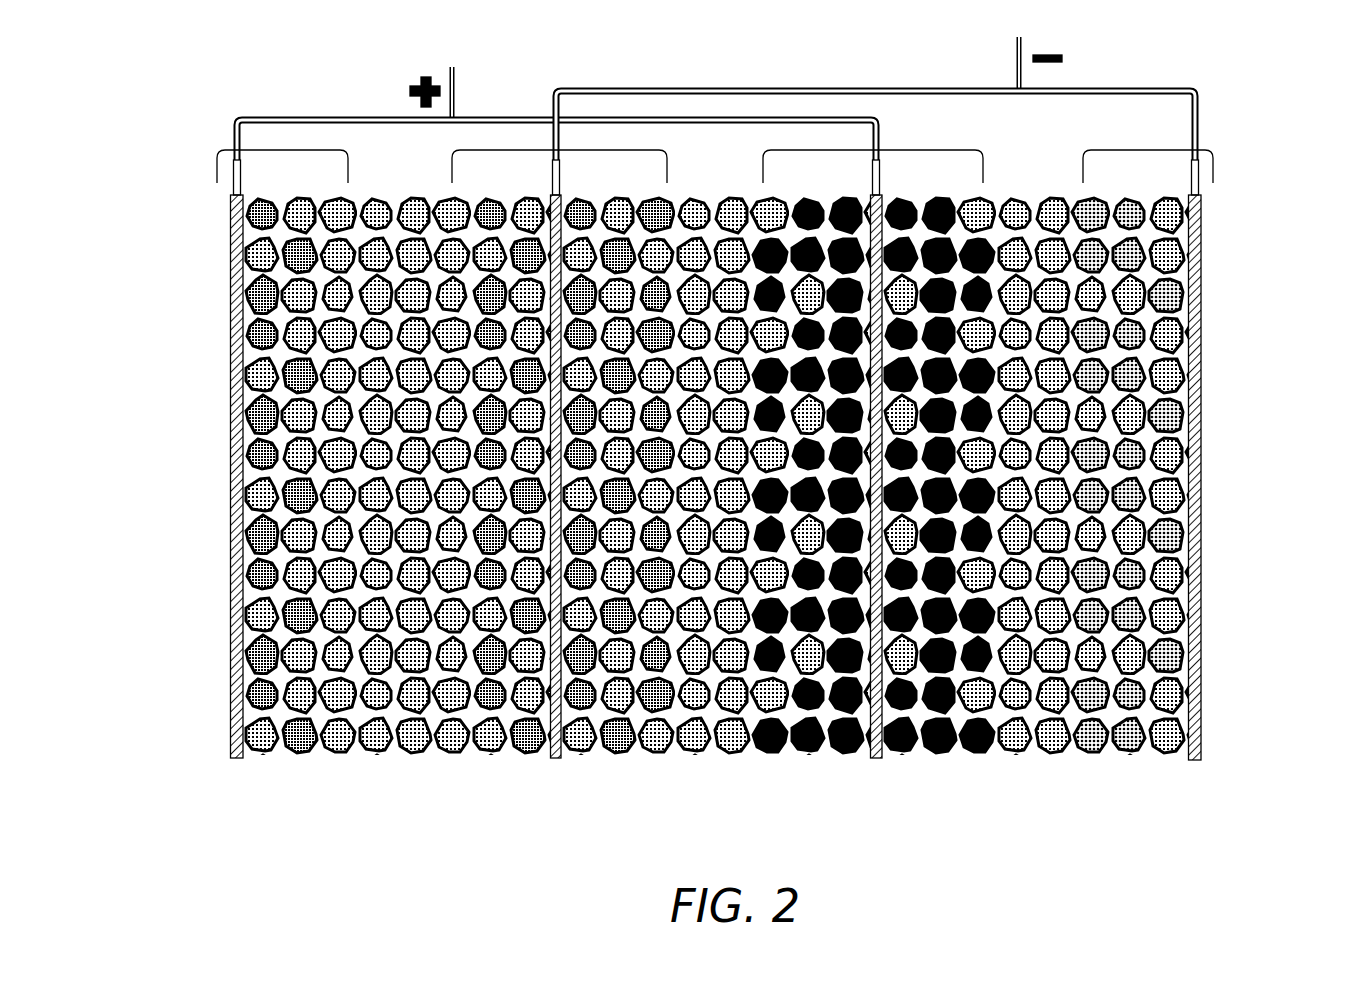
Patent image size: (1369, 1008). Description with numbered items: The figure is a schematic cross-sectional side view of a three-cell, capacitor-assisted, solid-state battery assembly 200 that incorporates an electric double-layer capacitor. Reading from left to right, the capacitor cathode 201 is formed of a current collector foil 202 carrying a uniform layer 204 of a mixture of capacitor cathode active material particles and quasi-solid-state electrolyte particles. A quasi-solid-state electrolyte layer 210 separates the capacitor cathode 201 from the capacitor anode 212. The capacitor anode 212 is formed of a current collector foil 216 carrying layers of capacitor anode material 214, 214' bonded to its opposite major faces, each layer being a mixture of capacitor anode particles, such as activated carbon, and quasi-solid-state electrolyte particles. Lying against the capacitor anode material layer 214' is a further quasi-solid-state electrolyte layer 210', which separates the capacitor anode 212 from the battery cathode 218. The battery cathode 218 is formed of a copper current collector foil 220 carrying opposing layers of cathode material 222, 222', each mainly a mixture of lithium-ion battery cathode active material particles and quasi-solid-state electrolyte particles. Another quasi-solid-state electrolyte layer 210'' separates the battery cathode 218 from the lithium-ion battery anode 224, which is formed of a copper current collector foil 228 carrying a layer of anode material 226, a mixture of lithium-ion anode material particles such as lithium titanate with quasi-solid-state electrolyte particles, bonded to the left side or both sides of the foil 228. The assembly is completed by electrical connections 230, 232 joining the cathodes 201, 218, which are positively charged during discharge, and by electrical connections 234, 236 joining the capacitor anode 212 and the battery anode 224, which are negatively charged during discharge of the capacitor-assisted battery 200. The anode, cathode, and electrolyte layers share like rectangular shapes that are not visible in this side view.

The capacitor-assisted solid-state battery assembly 200 is at (1245, 120).
The capacitor cathode 201 is at (263, 140).
The current collector foil 202 is at (230, 697).
The layer of capacitor cathode material 204 is at (320, 775).
The quasi-solid-state electrolyte layer 210 is at (395, 522).
The quasi-solid-state electrolyte layer 210' is at (708, 523).
The quasi-solid-state electrolyte layer 210'' is at (1042, 524).
The capacitor anode 212 is at (530, 140).
The layer of capacitor anode material 214 is at (396, 533).
The layer of capacitor anode material 214' is at (618, 530).
The current collector foil 216 is at (555, 762).
The battery cathode 218 is at (910, 140).
The copper current collector foil 220 is at (877, 762).
The layer of cathode material 222 is at (810, 531).
The layer of cathode material 222' is at (939, 524).
The battery anode 224 is at (1150, 140).
The layer of anode material 226 is at (1132, 770).
The copper current collector foil 228 is at (1203, 632).
The electrical connection 230 is at (362, 116).
The electrical connection 232 is at (662, 116).
The electrical connection 234 is at (828, 87).
The electrical connection 236 is at (1128, 87).